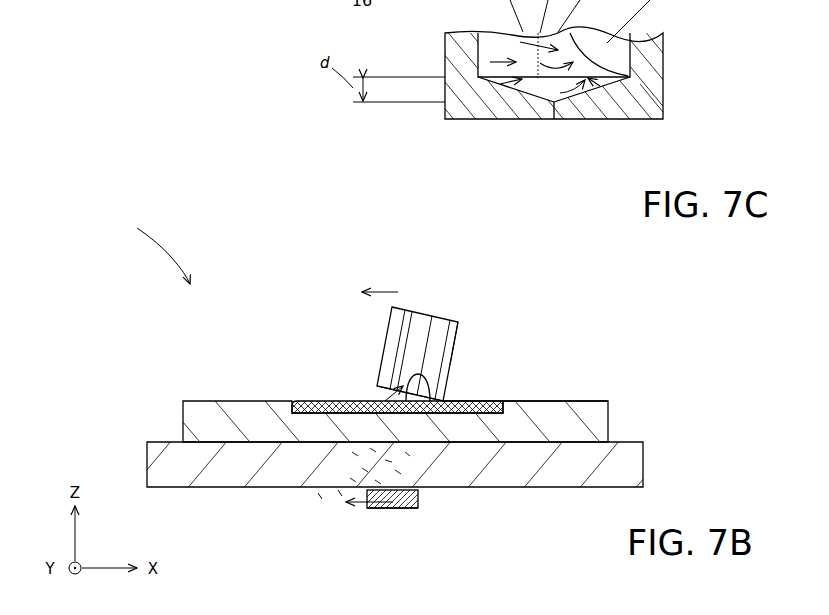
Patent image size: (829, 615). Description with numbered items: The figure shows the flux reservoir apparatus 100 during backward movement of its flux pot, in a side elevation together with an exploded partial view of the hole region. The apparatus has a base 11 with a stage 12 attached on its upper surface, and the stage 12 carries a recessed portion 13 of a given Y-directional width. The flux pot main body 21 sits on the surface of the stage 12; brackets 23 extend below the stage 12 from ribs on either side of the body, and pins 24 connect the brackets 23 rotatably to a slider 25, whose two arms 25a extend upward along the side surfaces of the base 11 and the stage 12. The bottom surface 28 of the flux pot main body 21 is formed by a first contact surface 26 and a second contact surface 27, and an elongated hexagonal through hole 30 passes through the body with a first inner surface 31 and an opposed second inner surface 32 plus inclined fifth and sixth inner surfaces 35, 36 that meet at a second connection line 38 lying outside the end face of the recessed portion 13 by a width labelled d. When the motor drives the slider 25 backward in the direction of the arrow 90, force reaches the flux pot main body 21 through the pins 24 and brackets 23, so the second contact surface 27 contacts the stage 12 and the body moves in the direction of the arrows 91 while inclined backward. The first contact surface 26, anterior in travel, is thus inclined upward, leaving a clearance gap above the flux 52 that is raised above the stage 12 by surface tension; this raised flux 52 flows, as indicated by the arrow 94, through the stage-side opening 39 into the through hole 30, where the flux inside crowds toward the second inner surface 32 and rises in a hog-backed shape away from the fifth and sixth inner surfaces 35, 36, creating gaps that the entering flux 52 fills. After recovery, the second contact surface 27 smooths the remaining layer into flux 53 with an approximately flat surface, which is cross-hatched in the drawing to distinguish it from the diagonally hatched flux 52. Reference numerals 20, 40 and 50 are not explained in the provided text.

In FIG. 7B, the flux reservoir apparatus 100 is at (149, 245).
In FIG. 7B, the base 11 is at (645, 468).
In FIG. 7B, the stage 12 is at (610, 418).
In FIG. 7B, the recessed portion 13 is at (510, 397).
In FIG. 7C, the head body 20 is at (667, 93).
In FIG. 7C, the flux pot main body 21 is at (667, 108).
In FIG. 7B, the flux pot main body 21 is at (463, 383).
In FIG. 7B, the bracket 23 is at (450, 497).
In FIG. 7B, the pin 24 is at (340, 492).
In FIG. 7B, the slider 25 is at (400, 512).
In FIG. 7B, the arm 25a is at (318, 495).
In FIG. 7C, the first contact surface 26 is at (484, 87).
In FIG. 7B, the first contact surface 26 is at (351, 326).
In FIG. 7C, the bottom surface 28 is at (447, 112).
In FIG. 7B, the bottom surface 28 is at (380, 393).
In FIG. 7C, the second contact surface 27 is at (665, 70).
In FIG. 7B, the second contact surface 27 is at (470, 397).
In FIG. 7B, the through hole 30 is at (420, 320).
In FIG. 7C, the first inner surface 31 is at (460, 47).
In FIG. 7B, the first inner surface 31 is at (413, 320).
In FIG. 7B, the second inner surface 32 is at (470, 370).
In FIG. 7C, the fifth inner surface 35 is at (527, 85).
In FIG. 7C, the sixth inner surface 36 is at (570, 105).
In FIG. 7C, the second connection line 38 is at (553, 120).
In FIG. 7B, the stage-side opening 39 is at (430, 337).
In FIG. 7C, the liquid droplet 40 is at (573, 103).
In FIG. 7B, the liquid droplet 40 is at (330, 437).
In FIG. 7B, the nozzle tip 50 is at (447, 350).
In FIG. 7B, the flux 52 is at (313, 393).
In FIG. 7B, the flux 53 is at (497, 397).
In FIG. 7B, the arrow 90 is at (352, 505).
In FIG. 7B, the arrow 91 is at (380, 282).
In FIG. 7B, the arrow 94 is at (387, 392).